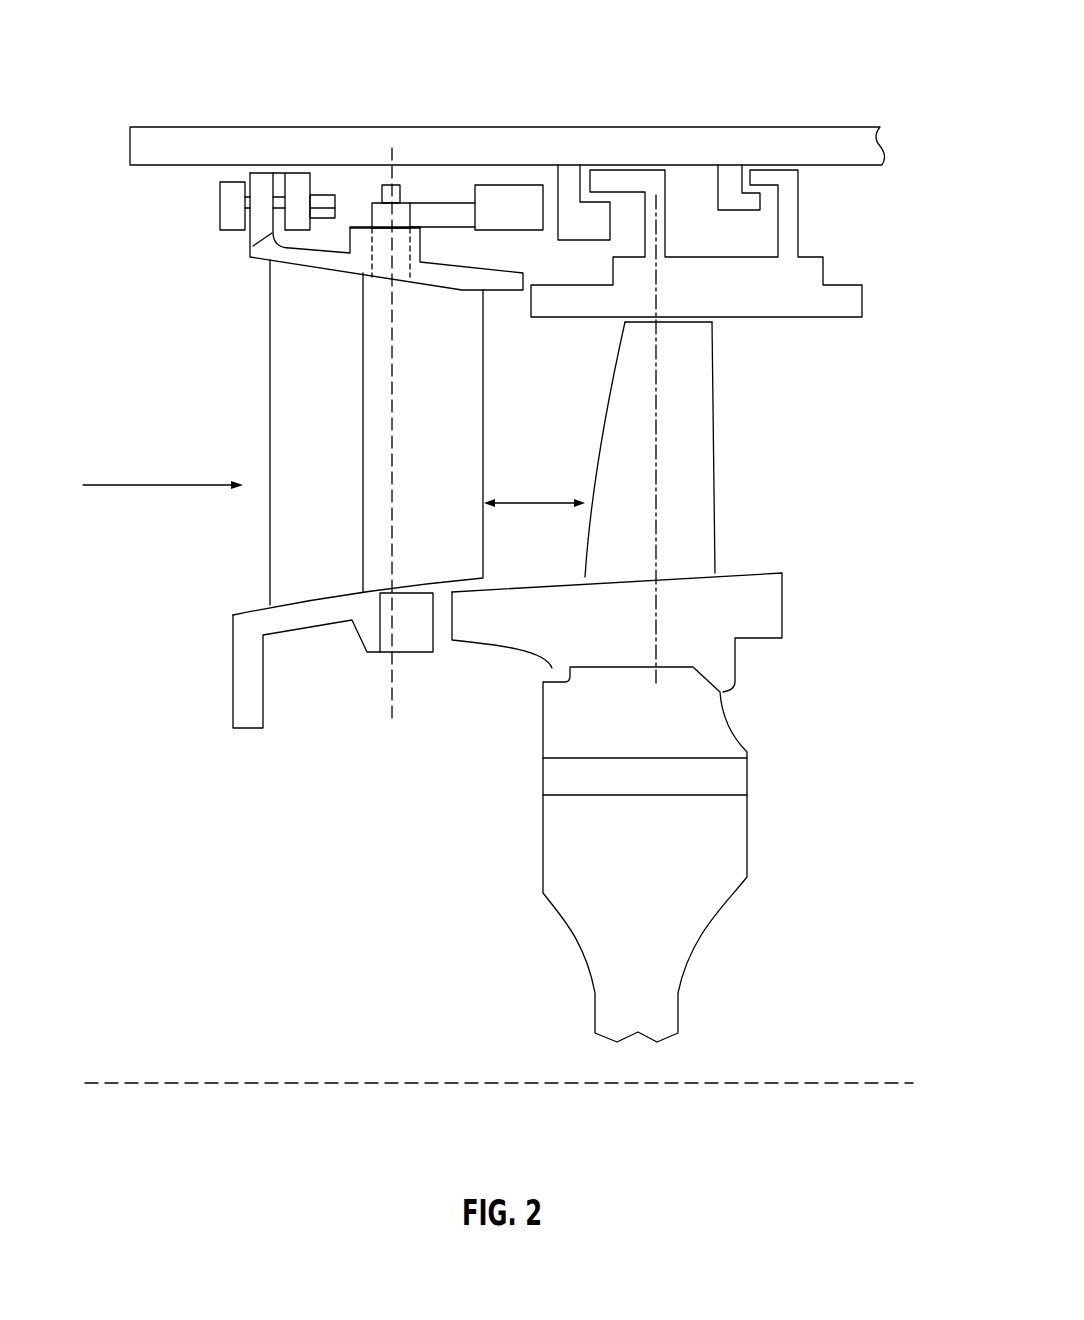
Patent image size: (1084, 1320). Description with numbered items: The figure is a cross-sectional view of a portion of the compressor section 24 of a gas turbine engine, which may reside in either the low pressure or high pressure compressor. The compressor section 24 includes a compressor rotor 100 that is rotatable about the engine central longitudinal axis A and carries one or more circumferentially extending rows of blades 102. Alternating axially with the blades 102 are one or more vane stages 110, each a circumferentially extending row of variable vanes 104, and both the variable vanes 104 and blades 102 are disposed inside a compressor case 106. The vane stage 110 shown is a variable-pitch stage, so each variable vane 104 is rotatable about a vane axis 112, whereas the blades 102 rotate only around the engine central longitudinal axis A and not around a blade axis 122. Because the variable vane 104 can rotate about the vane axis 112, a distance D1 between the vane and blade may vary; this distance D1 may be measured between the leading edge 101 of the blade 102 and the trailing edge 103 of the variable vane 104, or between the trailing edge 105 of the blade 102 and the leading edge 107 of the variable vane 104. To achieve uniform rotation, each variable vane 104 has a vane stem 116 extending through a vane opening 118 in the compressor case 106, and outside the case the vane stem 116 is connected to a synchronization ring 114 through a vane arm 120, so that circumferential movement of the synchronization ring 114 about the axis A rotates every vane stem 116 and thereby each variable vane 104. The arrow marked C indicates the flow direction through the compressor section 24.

The compressor section 24 is at (740, 70).
The compressor rotor 100 is at (617, 618).
The leading edge 101 is at (600, 447).
The blade 102 is at (650, 449).
The trailing edge 103 is at (485, 338).
The variable vane 104 is at (401, 437).
The trailing edge 105 is at (713, 467).
The compressor case 106 is at (325, 235).
The leading edge 107 is at (363, 332).
The vane stage 110 is at (523, 116).
The vane axis 112 is at (392, 697).
The synchronization ring 114 is at (517, 188).
The vane stem 116 is at (387, 183).
The vane opening 118 is at (372, 255).
The vane arm 120 is at (457, 178).
The blade axis 122 is at (656, 600).
The distance D1 is at (533, 503).
The core flow direction C is at (130, 483).
The engine central longitudinal axis A is at (847, 1084).